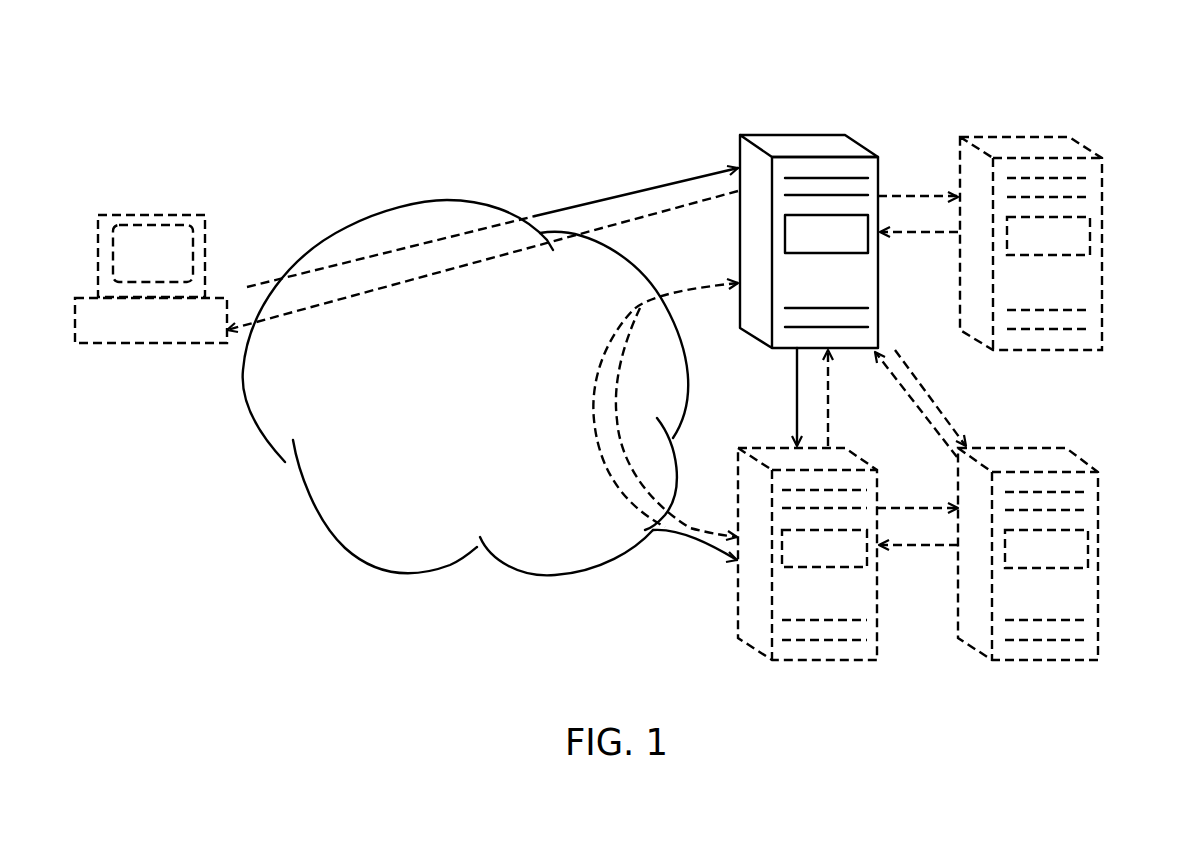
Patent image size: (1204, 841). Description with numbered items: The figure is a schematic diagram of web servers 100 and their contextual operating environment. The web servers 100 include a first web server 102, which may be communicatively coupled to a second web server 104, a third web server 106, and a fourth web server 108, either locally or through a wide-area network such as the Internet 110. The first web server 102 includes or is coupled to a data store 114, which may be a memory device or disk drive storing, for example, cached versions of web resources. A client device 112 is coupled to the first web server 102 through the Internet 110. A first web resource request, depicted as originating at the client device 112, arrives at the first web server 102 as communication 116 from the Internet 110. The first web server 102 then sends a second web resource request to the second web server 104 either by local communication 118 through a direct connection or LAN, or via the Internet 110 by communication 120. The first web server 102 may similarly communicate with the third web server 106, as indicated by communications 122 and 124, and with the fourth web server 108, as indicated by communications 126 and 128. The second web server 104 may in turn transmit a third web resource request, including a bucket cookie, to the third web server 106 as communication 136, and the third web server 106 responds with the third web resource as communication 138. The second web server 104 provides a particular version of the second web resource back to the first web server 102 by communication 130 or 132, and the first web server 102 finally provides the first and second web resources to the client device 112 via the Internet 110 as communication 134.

The web servers 100 is at (950, 68).
The first web server 102 is at (830, 132).
The second web server 104 is at (845, 660).
The third web server 106 is at (1068, 660).
The fourth web server 108 is at (1045, 138).
The Internet 110 is at (313, 488).
The client device 112 is at (128, 322).
The data store 114 is at (792, 147).
The communication 116 is at (657, 185).
The local communication 118 is at (792, 388).
The communication 120 is at (693, 563).
The communication 122 is at (948, 423).
The communication 124 is at (923, 418).
The communication 126 is at (938, 197).
The communication 128 is at (897, 233).
The communication 130 is at (828, 390).
The communication 132 is at (673, 518).
The communication 134 is at (647, 213).
The communication 136 is at (938, 508).
The communication 138 is at (898, 545).